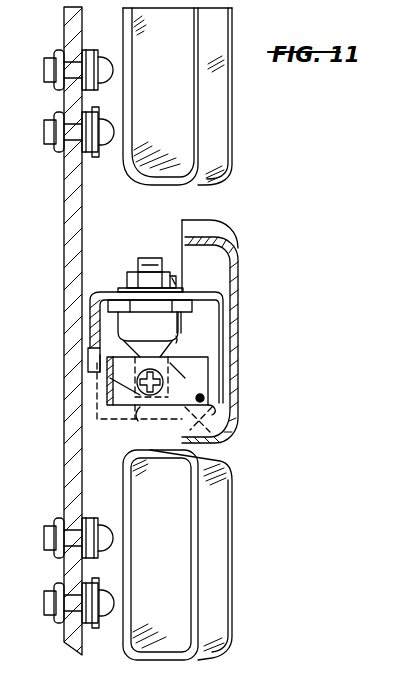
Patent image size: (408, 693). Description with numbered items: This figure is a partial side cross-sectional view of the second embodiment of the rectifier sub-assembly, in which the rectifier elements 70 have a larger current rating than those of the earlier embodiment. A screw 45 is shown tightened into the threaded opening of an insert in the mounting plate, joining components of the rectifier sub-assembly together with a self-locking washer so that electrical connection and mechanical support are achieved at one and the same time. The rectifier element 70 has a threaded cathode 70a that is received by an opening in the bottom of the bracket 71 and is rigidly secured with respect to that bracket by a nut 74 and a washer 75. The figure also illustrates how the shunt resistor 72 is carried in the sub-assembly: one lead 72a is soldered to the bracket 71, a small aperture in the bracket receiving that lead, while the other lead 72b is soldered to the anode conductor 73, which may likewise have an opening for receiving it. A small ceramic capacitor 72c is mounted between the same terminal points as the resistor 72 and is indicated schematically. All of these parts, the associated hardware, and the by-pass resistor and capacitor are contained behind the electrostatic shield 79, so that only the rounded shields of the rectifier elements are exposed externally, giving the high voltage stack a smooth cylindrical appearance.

The screw 45 is at (108, 55).
The rectifier element 70 is at (183, 326).
The threaded cathode 70a is at (167, 244).
The bracket 71 is at (194, 288).
The shunt resistor 72 is at (226, 441).
The lead 72a is at (100, 362).
The lead 72b is at (215, 412).
The capacitor 72c is at (140, 414).
The anode conductor 73 is at (197, 372).
The nut 74 is at (134, 276).
The washer 75 is at (120, 289).
The electrostatic shield 79 is at (237, 272).